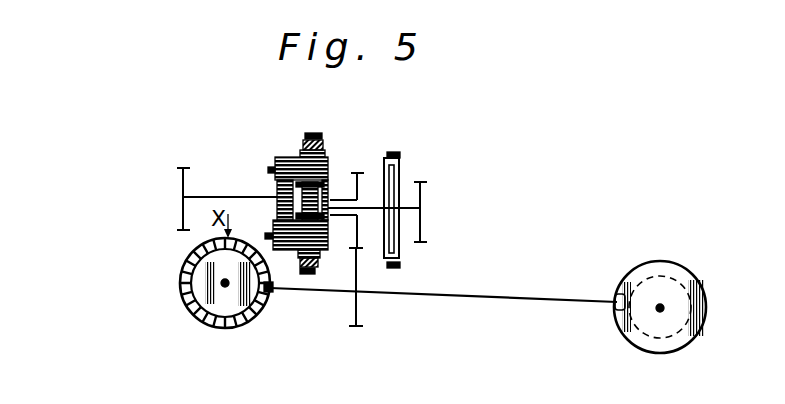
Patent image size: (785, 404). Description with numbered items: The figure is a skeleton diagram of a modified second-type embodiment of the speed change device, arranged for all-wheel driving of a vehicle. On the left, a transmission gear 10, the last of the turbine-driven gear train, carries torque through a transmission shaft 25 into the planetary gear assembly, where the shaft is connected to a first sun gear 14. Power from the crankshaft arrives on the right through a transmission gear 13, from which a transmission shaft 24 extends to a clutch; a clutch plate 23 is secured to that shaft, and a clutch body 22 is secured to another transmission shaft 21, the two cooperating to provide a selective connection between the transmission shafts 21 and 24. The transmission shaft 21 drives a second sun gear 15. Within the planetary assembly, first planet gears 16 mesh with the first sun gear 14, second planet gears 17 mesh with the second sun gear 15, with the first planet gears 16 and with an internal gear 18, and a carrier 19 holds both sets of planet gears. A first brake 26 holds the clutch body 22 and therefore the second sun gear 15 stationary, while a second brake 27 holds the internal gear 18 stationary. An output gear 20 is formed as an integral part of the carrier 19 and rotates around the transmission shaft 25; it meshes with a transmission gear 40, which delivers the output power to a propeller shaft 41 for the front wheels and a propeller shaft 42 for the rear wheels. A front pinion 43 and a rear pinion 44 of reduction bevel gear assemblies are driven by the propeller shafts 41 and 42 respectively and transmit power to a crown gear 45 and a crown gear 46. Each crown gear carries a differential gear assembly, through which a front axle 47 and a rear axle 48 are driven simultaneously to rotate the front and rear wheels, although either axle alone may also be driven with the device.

The transmission gear 10 is at (183, 187).
The transmission gear 13 is at (408, 204).
The first sun gear 14 is at (277, 196).
The second sun gear 15 is at (324, 265).
The first planet gears 16 is at (284, 157).
The second planet gears 17 is at (326, 157).
The internal gear 18 is at (324, 133).
The carrier 19 is at (330, 171).
The output gear 20 is at (370, 206).
The transmission shaft 21 is at (370, 216).
The clutch body 22 is at (398, 185).
The clutch plate 23 is at (402, 194).
The transmission shaft 24 is at (421, 192).
The transmission shaft 25 is at (202, 194).
The first brake 26 is at (396, 151).
The second brake 27 is at (307, 132).
The transmission gear 40 is at (358, 306).
The propeller shaft 41 is at (325, 293).
The propeller shaft 42 is at (480, 298).
The front pinion 43 is at (271, 286).
The rear pinion 44 is at (613, 303).
The crown gear 45 is at (230, 328).
The crown gear 46 is at (632, 341).
The front axle 47 is at (221, 284).
The rear axle 48 is at (662, 313).